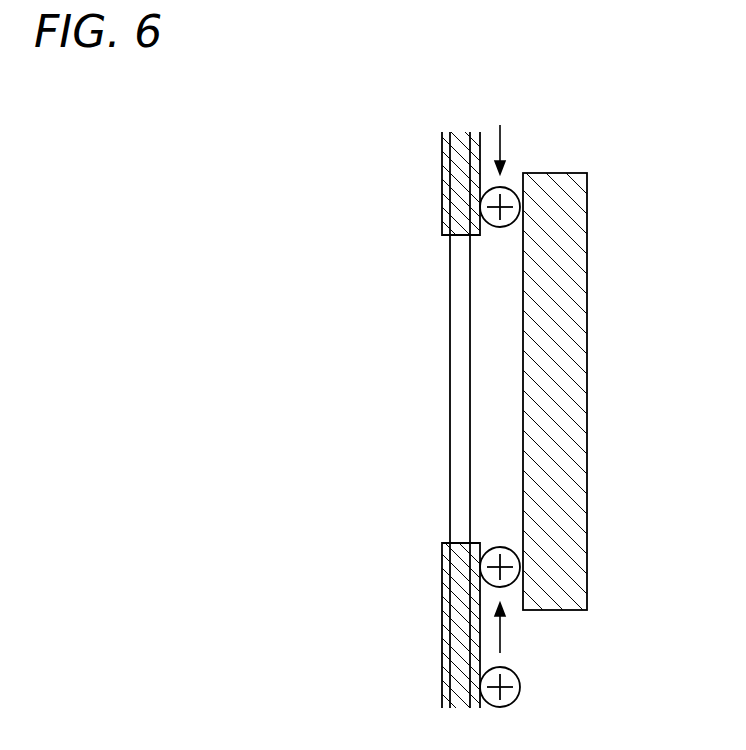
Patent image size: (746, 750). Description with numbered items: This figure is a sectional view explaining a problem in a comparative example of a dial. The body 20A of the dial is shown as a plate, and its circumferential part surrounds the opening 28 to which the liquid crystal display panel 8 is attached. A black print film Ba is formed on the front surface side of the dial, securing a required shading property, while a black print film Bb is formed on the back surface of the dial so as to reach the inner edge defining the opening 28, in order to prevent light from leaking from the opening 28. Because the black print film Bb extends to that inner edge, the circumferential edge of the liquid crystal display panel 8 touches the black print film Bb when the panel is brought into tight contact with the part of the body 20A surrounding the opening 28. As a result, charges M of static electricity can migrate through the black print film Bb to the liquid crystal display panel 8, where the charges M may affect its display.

The body 20A is at (460, 162).
The opening 28 is at (450, 432).
The black print film Ba is at (445, 210).
The black print film Bb is at (475, 148).
The liquid crystal display panel 8 is at (572, 400).
The charges of static electricity M is at (499, 228).